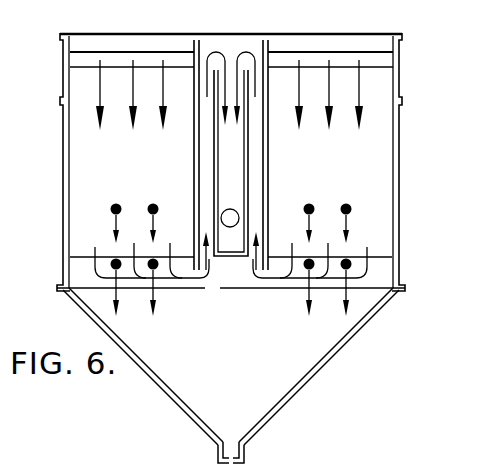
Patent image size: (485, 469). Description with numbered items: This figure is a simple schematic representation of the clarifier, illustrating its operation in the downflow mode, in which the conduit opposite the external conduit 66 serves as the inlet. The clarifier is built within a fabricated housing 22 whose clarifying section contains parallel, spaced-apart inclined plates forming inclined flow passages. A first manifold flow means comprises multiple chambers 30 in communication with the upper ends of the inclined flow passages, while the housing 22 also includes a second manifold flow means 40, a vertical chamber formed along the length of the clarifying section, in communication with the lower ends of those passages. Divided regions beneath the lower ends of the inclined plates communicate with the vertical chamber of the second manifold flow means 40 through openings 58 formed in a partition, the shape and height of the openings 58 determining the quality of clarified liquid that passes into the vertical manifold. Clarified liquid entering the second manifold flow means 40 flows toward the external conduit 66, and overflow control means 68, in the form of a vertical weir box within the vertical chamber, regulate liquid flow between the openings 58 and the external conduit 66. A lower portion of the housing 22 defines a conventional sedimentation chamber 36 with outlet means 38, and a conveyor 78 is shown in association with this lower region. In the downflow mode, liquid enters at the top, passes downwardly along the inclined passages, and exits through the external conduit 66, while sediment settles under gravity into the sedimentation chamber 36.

The housing 22 is at (58, 152).
The chambers 30 is at (150, 40).
The second manifold flow means 40 is at (244, 40).
The overflow control means 68 is at (246, 168).
The external conduit 66 is at (237, 212).
The openings 58 is at (252, 273).
The sedimentation chamber 36 is at (250, 388).
The outlet means 38 is at (213, 463).
The conveyor 78 is at (316, 463).